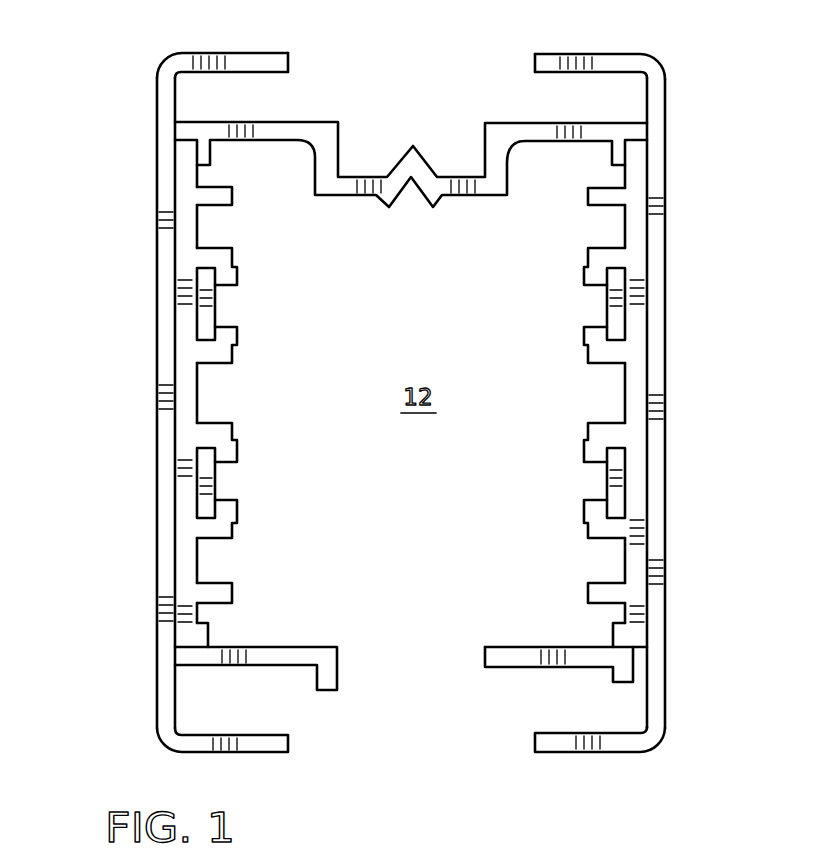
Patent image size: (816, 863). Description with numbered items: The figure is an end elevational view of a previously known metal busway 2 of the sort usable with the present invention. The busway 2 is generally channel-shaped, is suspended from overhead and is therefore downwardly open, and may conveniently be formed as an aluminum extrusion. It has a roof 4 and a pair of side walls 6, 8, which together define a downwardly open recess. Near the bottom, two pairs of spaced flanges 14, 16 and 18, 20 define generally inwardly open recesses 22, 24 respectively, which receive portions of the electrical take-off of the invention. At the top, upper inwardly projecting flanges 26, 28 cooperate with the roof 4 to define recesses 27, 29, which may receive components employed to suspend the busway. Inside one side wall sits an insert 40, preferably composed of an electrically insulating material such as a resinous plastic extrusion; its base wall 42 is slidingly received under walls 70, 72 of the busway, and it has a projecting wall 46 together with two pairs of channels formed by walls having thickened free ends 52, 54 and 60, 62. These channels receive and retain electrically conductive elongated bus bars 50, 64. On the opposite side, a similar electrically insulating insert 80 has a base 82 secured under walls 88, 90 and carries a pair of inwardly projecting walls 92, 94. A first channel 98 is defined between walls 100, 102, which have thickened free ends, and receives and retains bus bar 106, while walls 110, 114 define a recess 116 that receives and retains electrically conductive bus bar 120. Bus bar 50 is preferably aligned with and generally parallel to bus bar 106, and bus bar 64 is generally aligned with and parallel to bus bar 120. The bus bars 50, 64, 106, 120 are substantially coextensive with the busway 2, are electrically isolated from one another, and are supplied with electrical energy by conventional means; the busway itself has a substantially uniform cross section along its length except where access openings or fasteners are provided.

The busway 2 is at (665, 217).
The roof 4 is at (340, 135).
The side wall 6 is at (160, 386).
The side wall 8 is at (662, 163).
The flange 14 is at (237, 752).
The flange 16 is at (338, 657).
The flange 18 is at (605, 752).
The flange 20 is at (555, 667).
The inwardly open recess 22 is at (259, 707).
The inwardly open recess 24 is at (545, 709).
The upper inwardly projecting flange 26 is at (222, 53).
The recess 27 is at (236, 94).
The upper inwardly projecting flange 28 is at (605, 54).
The recess 29 is at (563, 105).
The insert 40 is at (181, 203).
The base wall 42 is at (185, 242).
The projecting wall 46 is at (233, 590).
The bus bar 50 is at (215, 307).
The thickened free end 52 is at (237, 273).
The thickened free end 54 is at (237, 337).
The thickened free end 60 is at (233, 430).
The thickened free end 62 is at (238, 516).
The bus bar 64 is at (215, 480).
The wall 70 is at (210, 153).
The wall 72 is at (210, 632).
The insert 80 is at (638, 363).
The base 82 is at (640, 432).
The wall 88 is at (612, 160).
The wall 90 is at (607, 635).
The inwardly projecting wall 92 is at (588, 197).
The inwardly projecting wall 94 is at (588, 590).
The first channel 98 is at (592, 310).
The wall 100 is at (588, 265).
The wall 102 is at (588, 340).
The bus bar 106 is at (632, 303).
The wall 110 is at (585, 443).
The wall 114 is at (585, 525).
The recess 116 is at (592, 480).
The bus bar 120 is at (640, 488).